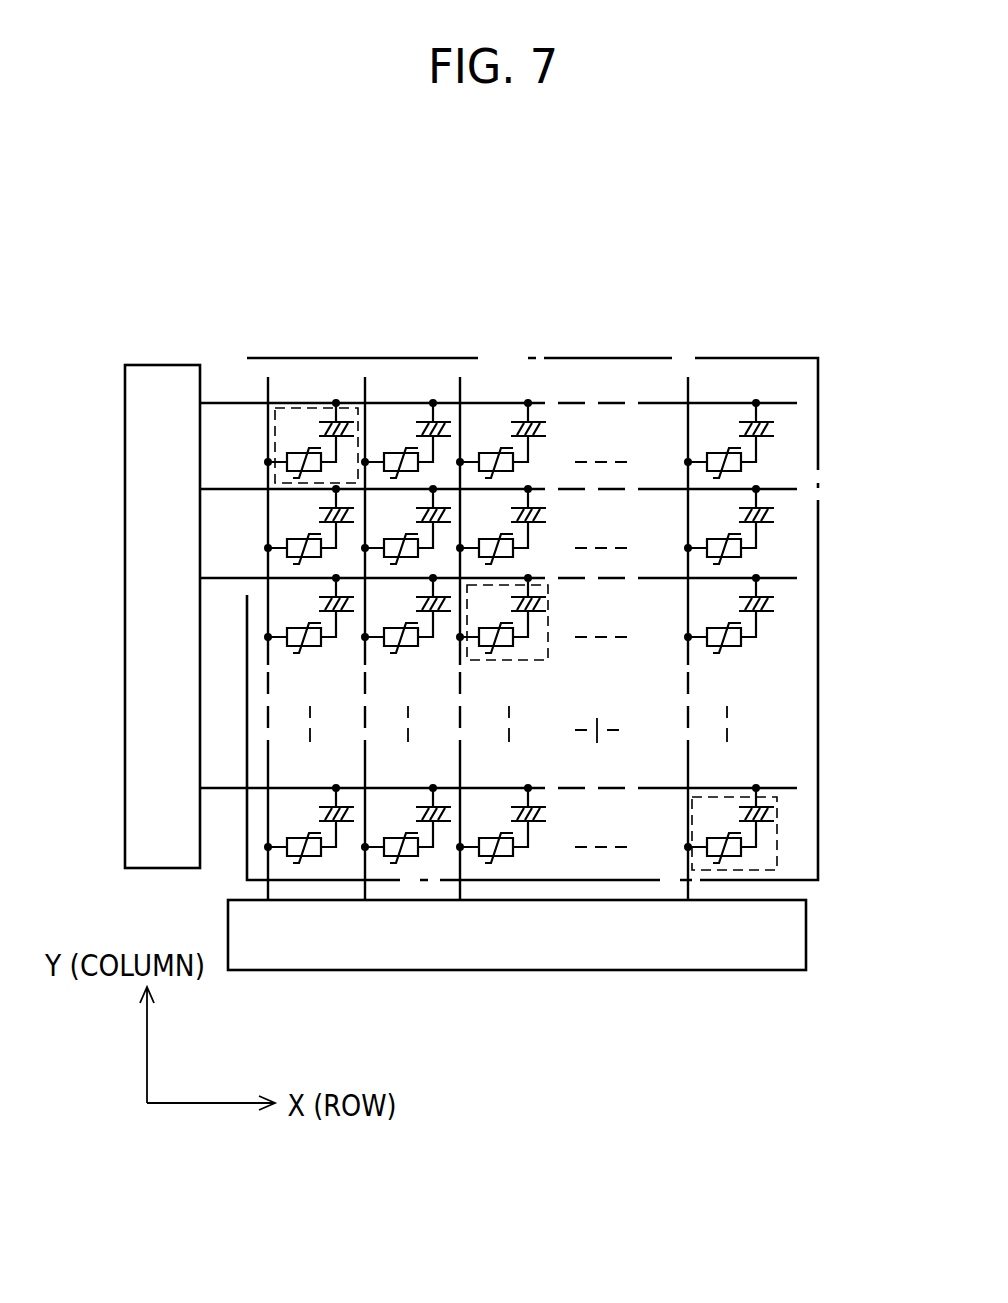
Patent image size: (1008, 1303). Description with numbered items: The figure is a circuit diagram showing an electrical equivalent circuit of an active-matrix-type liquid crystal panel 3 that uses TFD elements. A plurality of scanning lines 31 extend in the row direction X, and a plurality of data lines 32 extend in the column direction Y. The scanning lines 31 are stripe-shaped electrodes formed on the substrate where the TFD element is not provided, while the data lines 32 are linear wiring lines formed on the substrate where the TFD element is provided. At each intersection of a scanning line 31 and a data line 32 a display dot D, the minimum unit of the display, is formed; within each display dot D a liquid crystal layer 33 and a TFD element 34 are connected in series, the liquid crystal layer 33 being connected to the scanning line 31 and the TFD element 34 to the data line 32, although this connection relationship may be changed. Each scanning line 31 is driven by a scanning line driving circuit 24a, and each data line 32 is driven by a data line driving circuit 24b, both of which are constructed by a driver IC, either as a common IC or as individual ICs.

The liquid crystal panel 3 is at (391, 245).
The scanning line driving circuit 24a is at (162, 365).
The data line driving circuit 24b is at (620, 972).
The scanning line 31 is at (770, 788).
The data line 32 is at (691, 386).
The liquid crystal layer 33 is at (548, 607).
The TFD element 34 is at (732, 648).
The display dot D is at (683, 822).